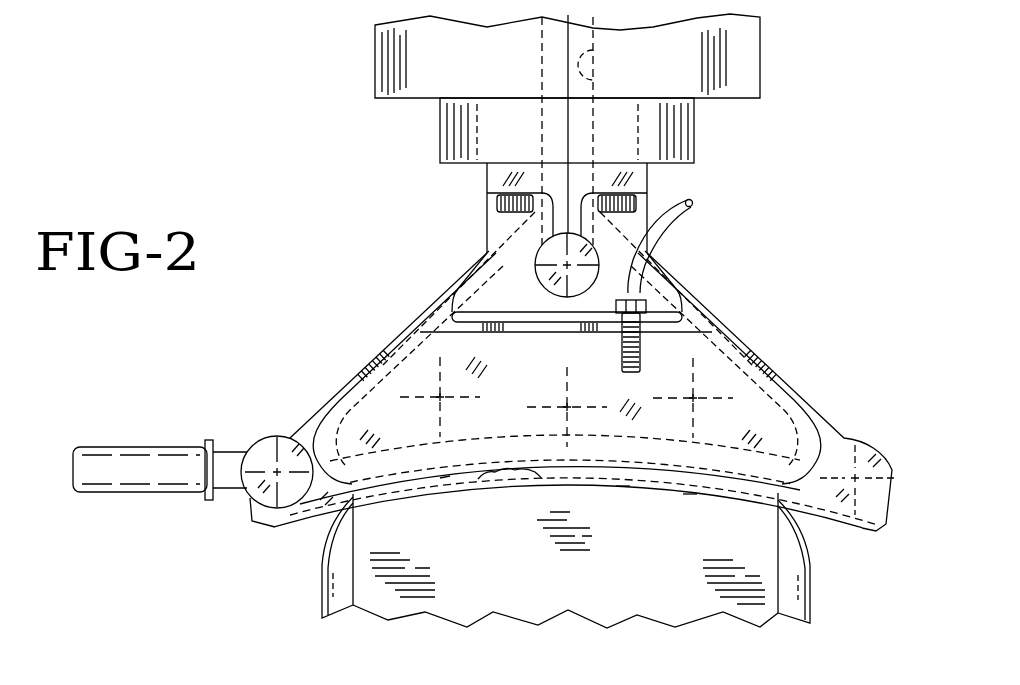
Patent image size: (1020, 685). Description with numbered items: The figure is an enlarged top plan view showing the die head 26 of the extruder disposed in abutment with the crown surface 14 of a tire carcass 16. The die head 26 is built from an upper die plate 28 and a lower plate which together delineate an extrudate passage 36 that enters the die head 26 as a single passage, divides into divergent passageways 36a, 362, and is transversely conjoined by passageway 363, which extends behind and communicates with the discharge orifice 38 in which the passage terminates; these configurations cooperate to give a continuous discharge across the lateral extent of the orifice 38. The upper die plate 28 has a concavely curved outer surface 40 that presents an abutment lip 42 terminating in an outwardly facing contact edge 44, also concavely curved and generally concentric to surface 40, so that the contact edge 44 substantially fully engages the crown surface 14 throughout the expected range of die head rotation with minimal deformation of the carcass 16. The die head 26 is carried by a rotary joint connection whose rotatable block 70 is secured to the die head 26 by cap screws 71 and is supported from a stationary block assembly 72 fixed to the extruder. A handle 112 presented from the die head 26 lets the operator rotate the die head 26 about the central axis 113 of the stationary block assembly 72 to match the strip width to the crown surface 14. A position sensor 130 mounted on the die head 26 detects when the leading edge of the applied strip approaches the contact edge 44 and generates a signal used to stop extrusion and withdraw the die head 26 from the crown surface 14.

The crown surface 14 is at (698, 605).
The tire carcass 16 is at (813, 582).
The die head 26 is at (785, 300).
The upper die plate 28 is at (747, 413).
The extrudate passage 36 is at (593, 80).
The divergent passageway 36a is at (360, 371).
The divergent passageway 362 is at (662, 292).
The transverse passageway 363 is at (597, 455).
The discharge orifice 38 is at (510, 478).
The outer surface 40 is at (622, 487).
The abutment lip 42 is at (445, 477).
The contact edge 44 is at (690, 494).
The rotatable block 70 is at (695, 148).
The cap screws 71 is at (500, 203).
The stationary block assembly 72 is at (765, 70).
The handle 112 is at (138, 462).
The central axis 113 is at (560, 37).
The position sensor 130 is at (620, 355).